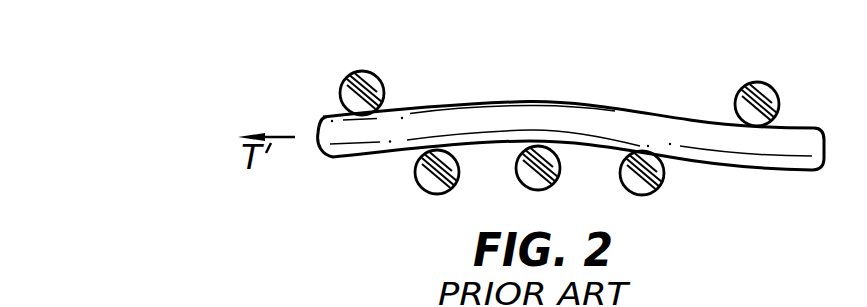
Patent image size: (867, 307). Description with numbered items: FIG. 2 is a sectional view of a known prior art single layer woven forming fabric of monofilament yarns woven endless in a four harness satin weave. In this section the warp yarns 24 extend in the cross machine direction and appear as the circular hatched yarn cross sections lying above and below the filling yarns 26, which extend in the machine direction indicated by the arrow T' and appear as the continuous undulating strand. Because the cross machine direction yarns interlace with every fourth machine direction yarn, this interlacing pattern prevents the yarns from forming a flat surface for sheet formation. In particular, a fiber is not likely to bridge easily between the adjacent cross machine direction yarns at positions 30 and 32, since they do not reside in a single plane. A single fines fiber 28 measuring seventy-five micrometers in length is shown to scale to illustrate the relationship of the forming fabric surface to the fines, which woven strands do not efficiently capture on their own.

The warp yarns 24 is at (630, 192).
The filling yarns 26 is at (748, 172).
The fines fiber 28 is at (522, 89).
The position 30 is at (374, 80).
The position 32 is at (437, 194).